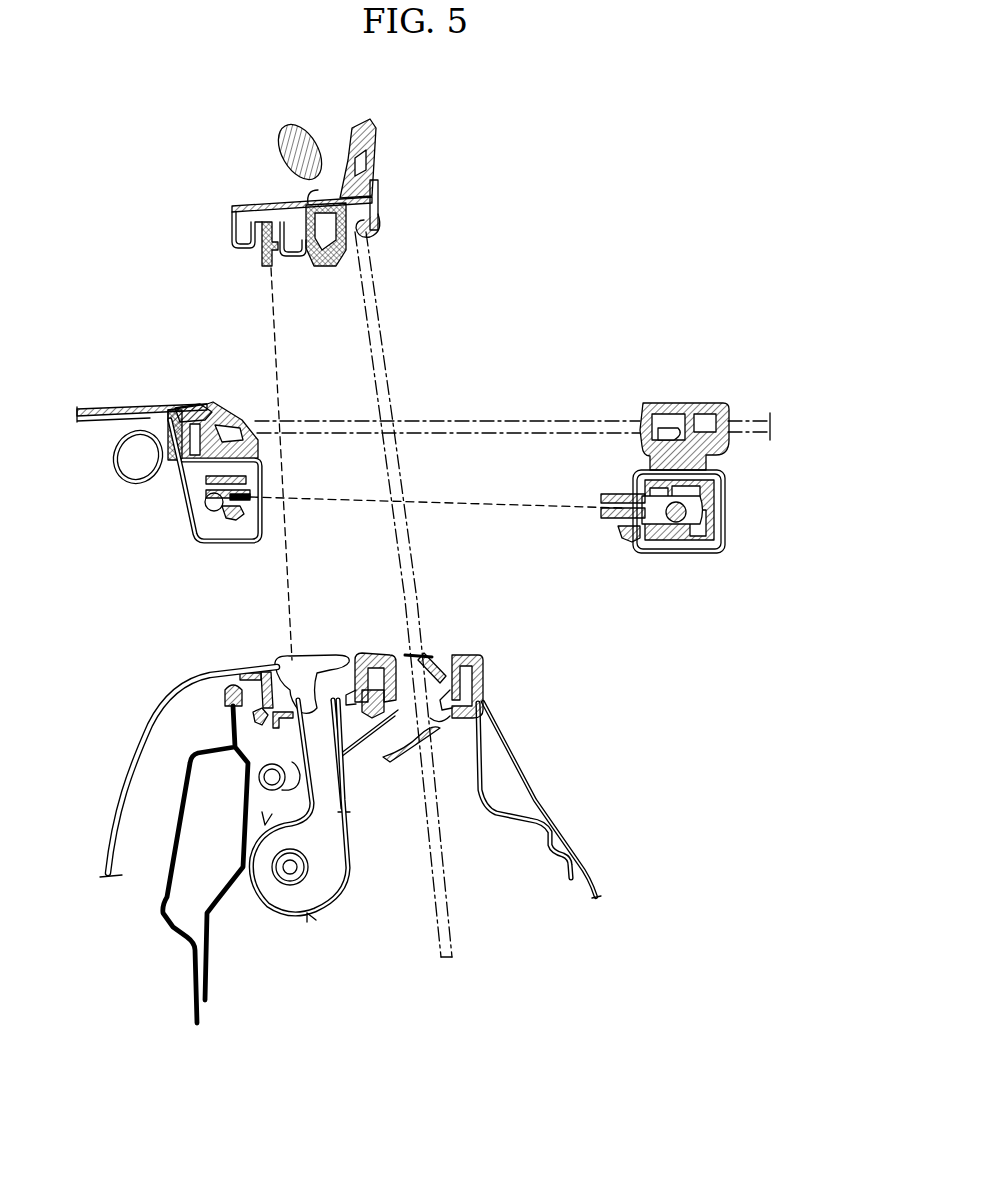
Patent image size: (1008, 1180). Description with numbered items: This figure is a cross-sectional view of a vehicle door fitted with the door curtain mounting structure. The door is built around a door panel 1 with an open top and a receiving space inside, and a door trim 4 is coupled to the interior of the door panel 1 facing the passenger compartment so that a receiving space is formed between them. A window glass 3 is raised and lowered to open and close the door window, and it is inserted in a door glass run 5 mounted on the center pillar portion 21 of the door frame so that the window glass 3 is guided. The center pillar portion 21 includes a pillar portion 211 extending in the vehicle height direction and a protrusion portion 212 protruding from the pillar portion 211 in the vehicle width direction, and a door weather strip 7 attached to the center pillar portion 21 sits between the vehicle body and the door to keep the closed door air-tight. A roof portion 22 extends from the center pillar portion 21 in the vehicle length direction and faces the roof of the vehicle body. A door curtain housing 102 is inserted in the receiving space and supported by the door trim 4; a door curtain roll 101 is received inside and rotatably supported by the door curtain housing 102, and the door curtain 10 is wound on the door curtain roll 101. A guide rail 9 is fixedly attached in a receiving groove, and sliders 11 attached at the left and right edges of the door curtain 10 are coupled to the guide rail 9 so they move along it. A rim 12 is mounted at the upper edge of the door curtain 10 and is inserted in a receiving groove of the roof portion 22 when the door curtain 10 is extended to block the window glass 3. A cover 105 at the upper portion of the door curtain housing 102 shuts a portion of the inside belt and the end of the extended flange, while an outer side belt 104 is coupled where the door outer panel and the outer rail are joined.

The door panel 1 is at (562, 775).
The window glass 3 is at (374, 298).
The door trim 4 is at (172, 679).
The door glass run 5 is at (372, 222).
The door weather strip 7 is at (122, 480).
The guide rail 9 is at (221, 512).
The door curtain 10 is at (275, 342).
The sliders 11 is at (253, 512).
The rim 12 is at (262, 262).
The center pillar portion 21 is at (143, 378).
The roof portion 22 is at (247, 170).
The door curtain roll 101 is at (286, 880).
The door curtain housing 102 is at (340, 902).
The outer side belt 104 is at (482, 665).
The cover 105 is at (371, 654).
The pillar portion 211 is at (83, 408).
The protrusion portion 212 is at (192, 531).